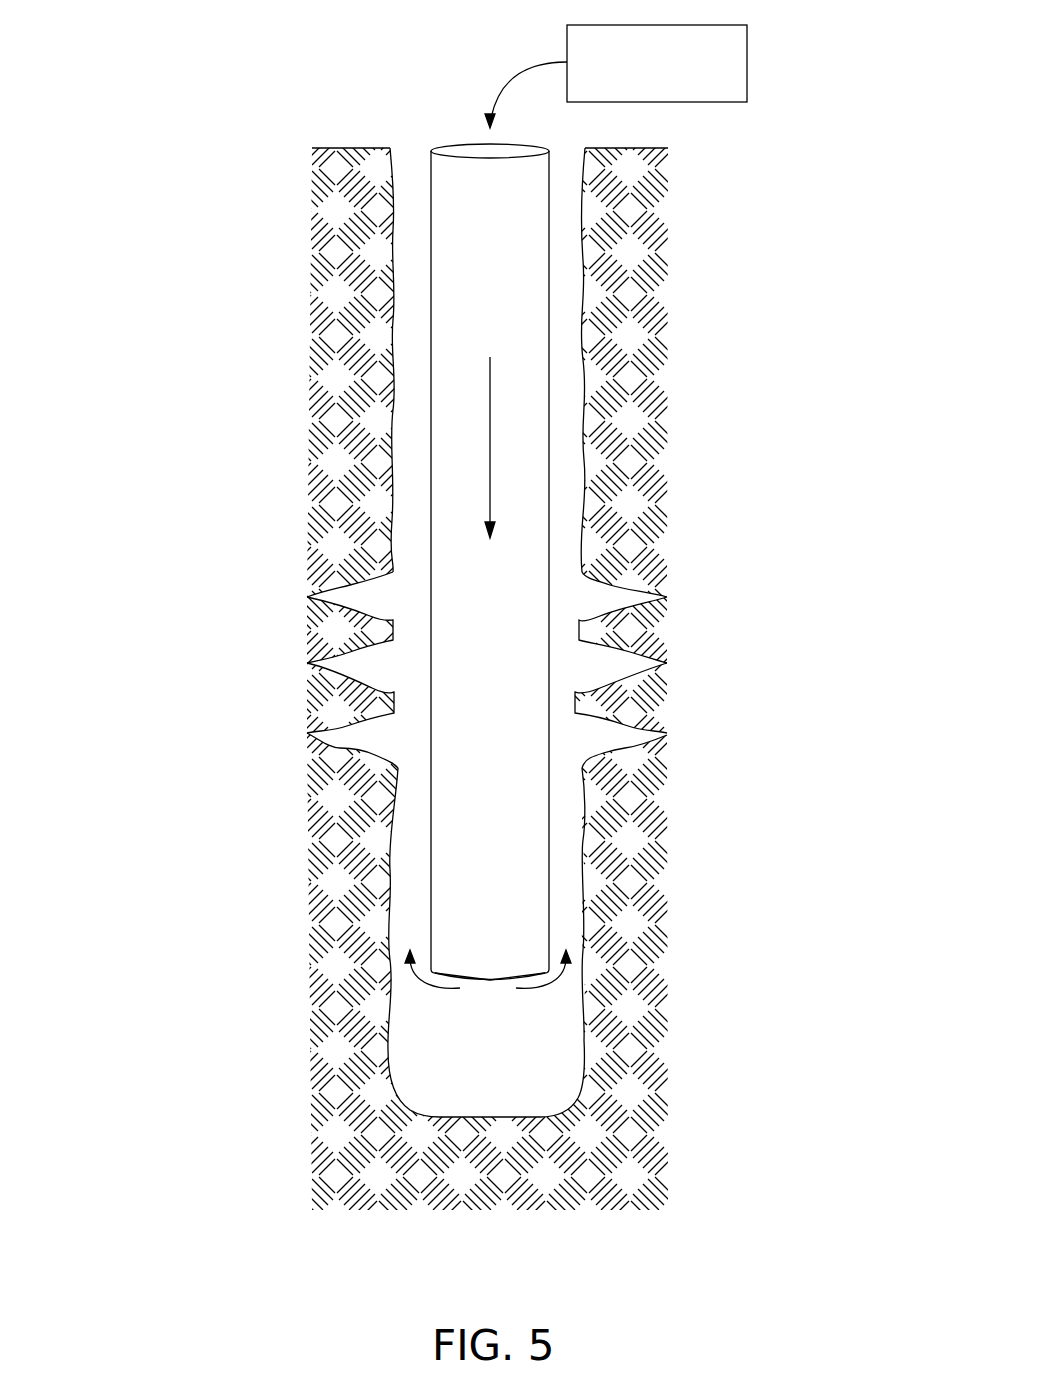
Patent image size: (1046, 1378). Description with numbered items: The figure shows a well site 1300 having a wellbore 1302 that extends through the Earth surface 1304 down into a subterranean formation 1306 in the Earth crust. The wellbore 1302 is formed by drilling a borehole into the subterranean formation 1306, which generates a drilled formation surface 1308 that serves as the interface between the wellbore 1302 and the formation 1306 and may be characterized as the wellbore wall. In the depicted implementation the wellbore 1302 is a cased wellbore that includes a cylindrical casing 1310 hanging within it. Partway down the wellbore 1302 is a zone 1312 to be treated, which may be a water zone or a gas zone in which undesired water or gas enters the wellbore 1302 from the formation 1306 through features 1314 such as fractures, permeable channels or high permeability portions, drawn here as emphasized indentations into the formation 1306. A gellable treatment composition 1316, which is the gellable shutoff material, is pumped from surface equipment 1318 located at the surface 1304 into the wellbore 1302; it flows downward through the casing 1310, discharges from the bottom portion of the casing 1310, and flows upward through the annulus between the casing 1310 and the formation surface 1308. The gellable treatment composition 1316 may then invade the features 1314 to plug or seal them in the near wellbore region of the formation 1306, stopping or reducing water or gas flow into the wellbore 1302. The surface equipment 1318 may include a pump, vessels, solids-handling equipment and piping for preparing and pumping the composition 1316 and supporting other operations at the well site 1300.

The well site 1300 is at (522, 1317).
The wellbore 1302 is at (566, 545).
The Earth surface 1304 is at (342, 147).
The subterranean formation 1306 is at (347, 250).
The drilled formation surface 1308 is at (393, 356).
The casing 1310 is at (549, 352).
The zone 1312 is at (252, 662).
The features 1314 is at (635, 652).
The gellable treatment composition 1316 is at (512, 72).
The surface equipment 1318 is at (688, 77).